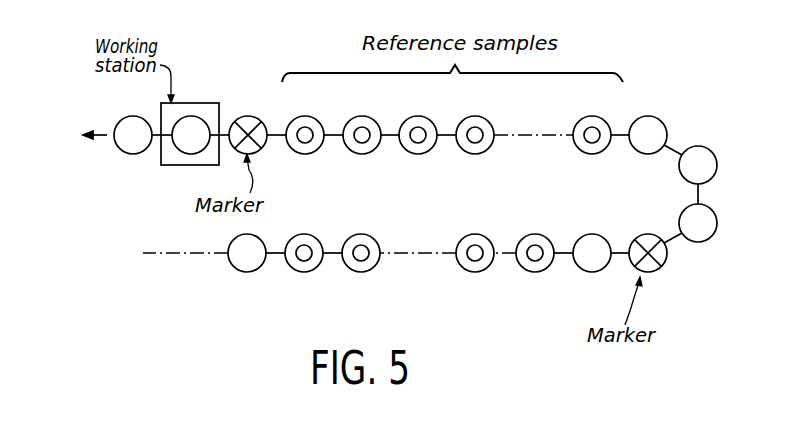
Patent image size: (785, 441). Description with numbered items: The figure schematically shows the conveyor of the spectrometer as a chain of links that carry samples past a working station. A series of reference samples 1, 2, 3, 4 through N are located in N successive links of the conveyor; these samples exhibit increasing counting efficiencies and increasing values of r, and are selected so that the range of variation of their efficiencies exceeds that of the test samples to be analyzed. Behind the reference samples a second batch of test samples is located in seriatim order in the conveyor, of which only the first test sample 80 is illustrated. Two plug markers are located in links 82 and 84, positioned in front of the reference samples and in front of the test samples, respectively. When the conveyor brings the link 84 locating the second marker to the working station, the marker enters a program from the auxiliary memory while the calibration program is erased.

The link 82 is at (244, 116).
The reference sample 1 is at (310, 152).
The reference sample 2 is at (367, 152).
The reference sample 3 is at (423, 152).
The reference sample 4 is at (480, 152).
The reference sample N is at (598, 152).
The test sample 80 is at (545, 272).
The link 84 is at (662, 258).